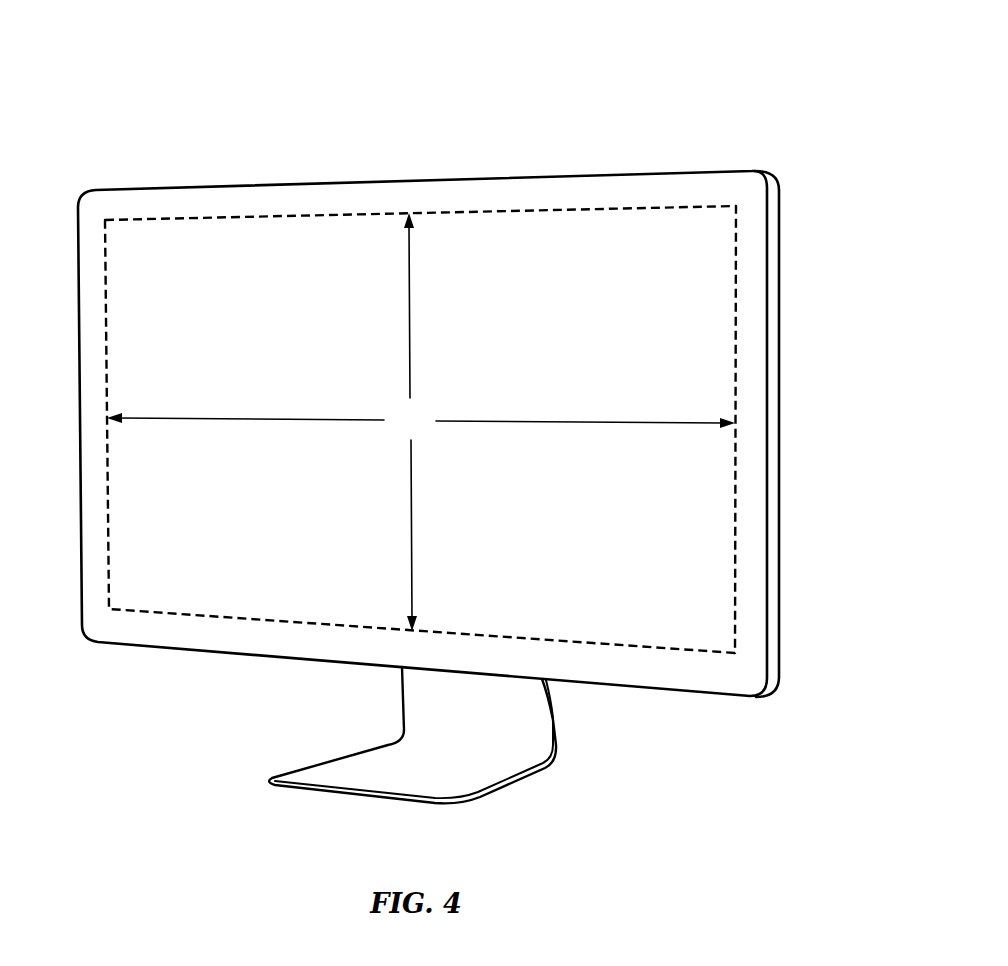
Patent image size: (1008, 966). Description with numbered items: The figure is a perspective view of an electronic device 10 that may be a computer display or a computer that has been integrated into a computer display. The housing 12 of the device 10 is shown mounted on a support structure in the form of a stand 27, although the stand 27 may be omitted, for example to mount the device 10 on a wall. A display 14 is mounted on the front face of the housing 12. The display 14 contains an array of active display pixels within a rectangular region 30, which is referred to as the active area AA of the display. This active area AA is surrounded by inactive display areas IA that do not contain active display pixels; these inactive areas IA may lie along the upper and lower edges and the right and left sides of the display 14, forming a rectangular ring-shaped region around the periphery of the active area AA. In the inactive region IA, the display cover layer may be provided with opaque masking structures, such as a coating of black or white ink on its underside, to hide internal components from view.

The electronic device 10 is at (594, 69).
The housing 12 is at (773, 248).
The display 14 is at (708, 543).
The rectangular region 30 is at (668, 652).
The stand 27 is at (403, 705).
The active area AA is at (421, 422).
The inactive display areas IA is at (627, 192).